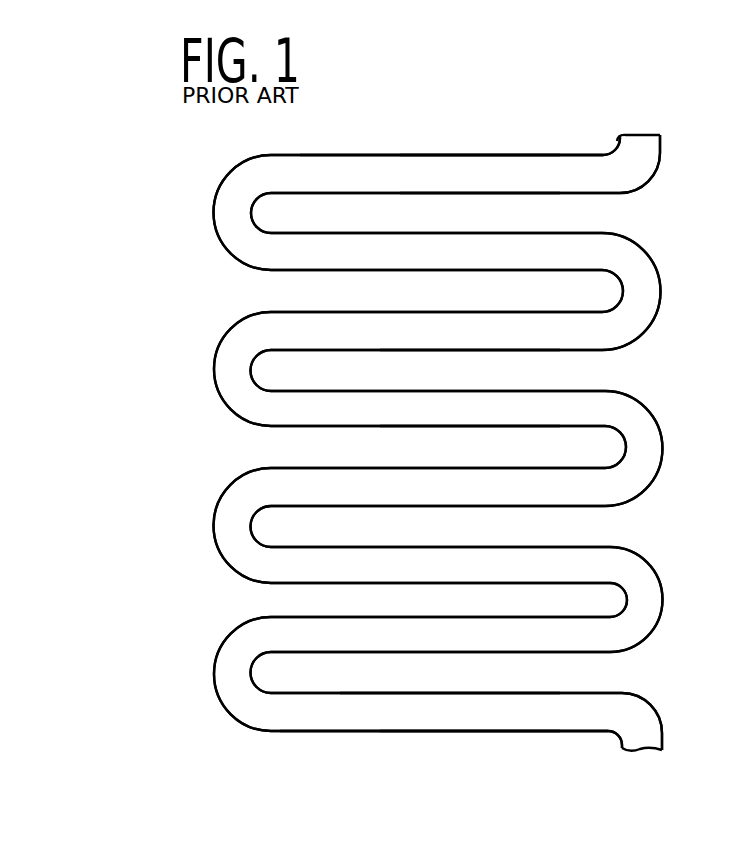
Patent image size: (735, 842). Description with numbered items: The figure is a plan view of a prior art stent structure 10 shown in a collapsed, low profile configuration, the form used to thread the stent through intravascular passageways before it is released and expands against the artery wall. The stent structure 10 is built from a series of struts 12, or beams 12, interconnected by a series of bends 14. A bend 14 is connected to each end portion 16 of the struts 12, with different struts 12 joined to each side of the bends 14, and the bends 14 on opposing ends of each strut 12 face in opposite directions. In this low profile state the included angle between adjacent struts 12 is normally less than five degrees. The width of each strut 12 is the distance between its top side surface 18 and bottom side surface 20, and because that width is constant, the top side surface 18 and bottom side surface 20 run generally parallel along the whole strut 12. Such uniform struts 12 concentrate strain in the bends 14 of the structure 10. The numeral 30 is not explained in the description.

The stent structure 10 is at (532, 106).
The strut 12 is at (430, 150).
The bend 14 is at (665, 149).
The end portion 16 is at (336, 150).
The top side surface 18 is at (479, 150).
The bottom side surface 20 is at (479, 196).
The flow direction 30 is at (722, 241).